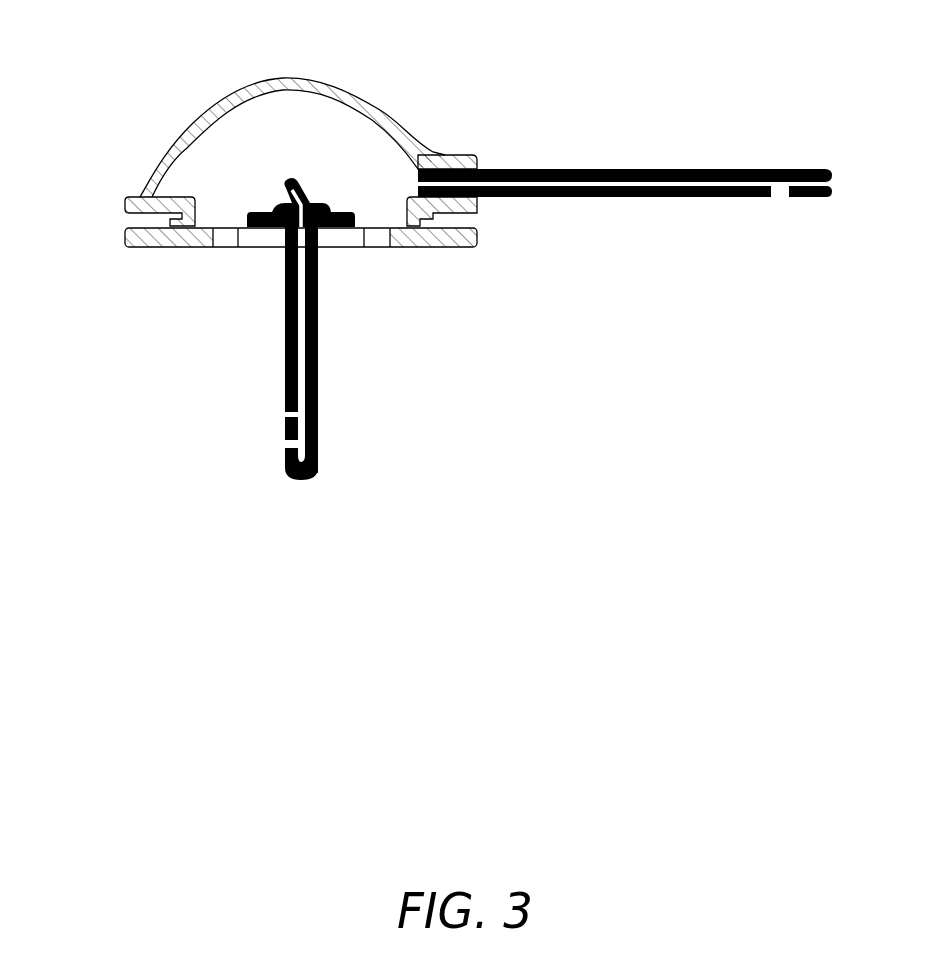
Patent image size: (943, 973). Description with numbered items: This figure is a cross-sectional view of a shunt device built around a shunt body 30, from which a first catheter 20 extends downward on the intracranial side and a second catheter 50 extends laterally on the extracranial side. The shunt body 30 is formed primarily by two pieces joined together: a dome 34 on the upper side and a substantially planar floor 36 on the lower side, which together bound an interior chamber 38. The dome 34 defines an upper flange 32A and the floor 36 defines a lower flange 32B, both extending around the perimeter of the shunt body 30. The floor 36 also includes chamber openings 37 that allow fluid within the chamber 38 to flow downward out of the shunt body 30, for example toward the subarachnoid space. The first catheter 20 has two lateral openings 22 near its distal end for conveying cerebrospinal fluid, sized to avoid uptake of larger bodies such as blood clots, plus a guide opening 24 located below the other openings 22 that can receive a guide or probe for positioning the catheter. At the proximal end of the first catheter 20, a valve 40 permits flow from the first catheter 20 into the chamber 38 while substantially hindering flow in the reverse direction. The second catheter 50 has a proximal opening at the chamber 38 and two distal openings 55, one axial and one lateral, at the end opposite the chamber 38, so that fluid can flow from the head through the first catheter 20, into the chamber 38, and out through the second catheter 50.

The shunt body 30 is at (118, 76).
The dome 34 is at (313, 79).
The chamber 38 is at (262, 112).
The valve 40 is at (310, 200).
The upper flange 32A is at (125, 201).
The lower flange 32B is at (125, 236).
The chamber openings 37 is at (215, 249).
The floor 36 is at (265, 249).
The first catheter 20 is at (318, 372).
The openings 22 is at (272, 416).
The guide opening 24 is at (272, 446).
The second catheter 50 is at (605, 198).
The distal openings 55 is at (782, 198).